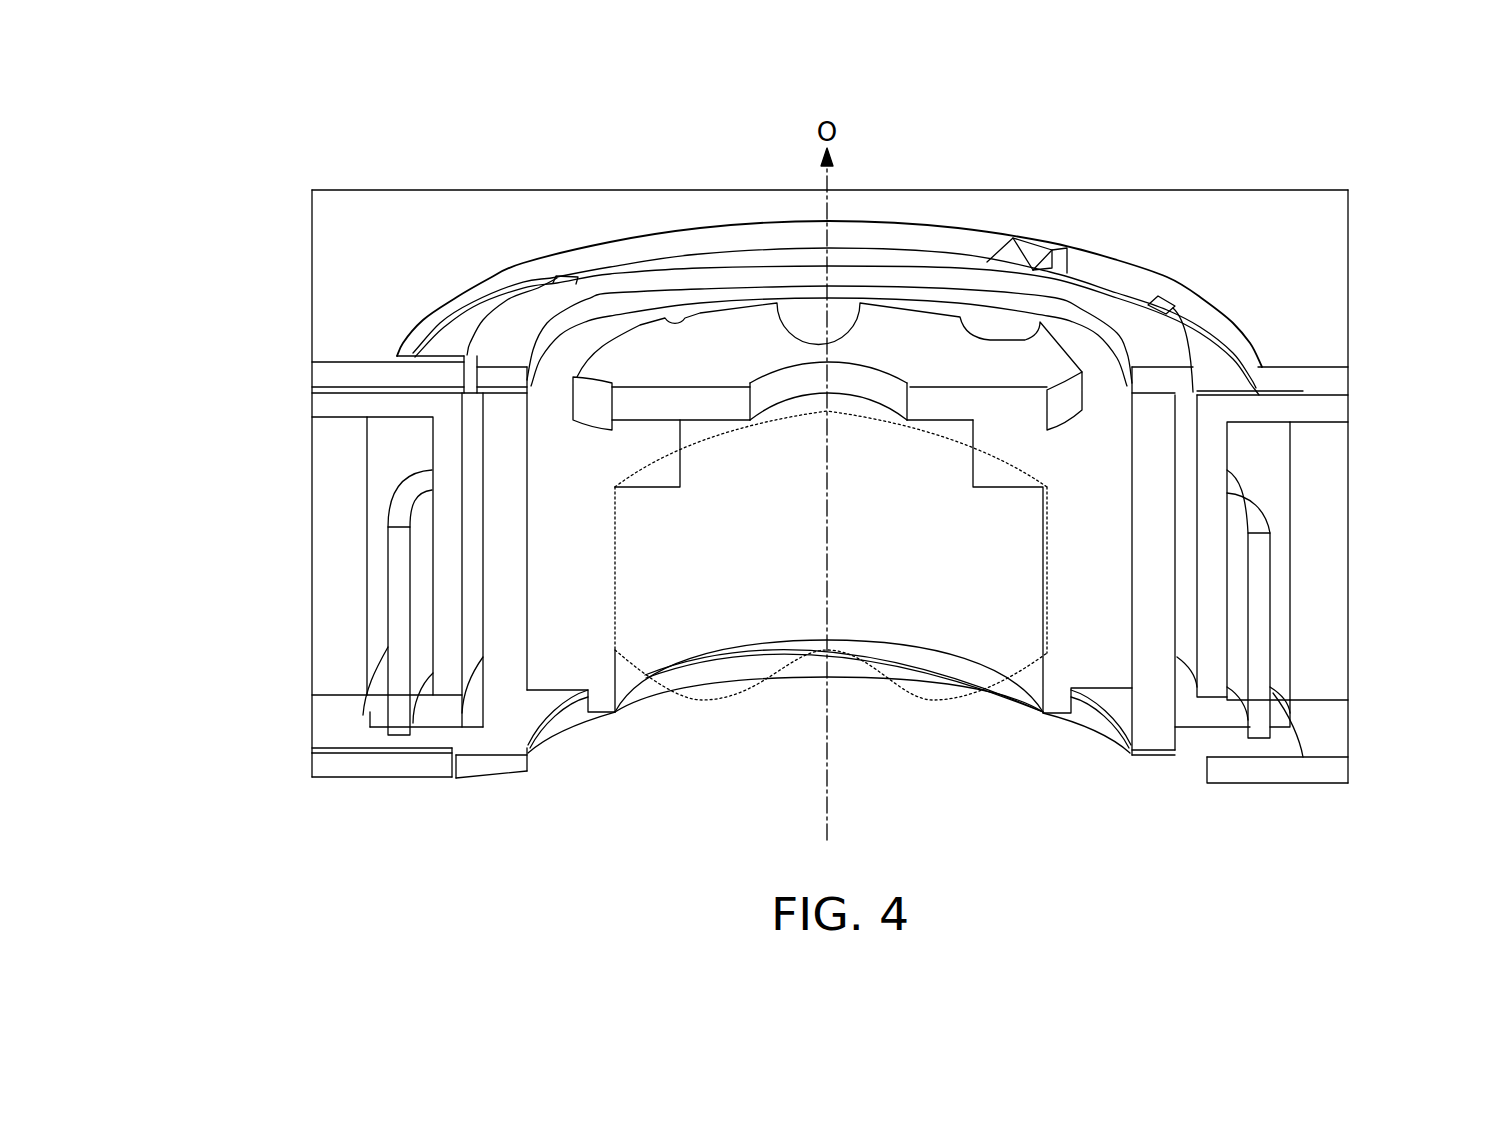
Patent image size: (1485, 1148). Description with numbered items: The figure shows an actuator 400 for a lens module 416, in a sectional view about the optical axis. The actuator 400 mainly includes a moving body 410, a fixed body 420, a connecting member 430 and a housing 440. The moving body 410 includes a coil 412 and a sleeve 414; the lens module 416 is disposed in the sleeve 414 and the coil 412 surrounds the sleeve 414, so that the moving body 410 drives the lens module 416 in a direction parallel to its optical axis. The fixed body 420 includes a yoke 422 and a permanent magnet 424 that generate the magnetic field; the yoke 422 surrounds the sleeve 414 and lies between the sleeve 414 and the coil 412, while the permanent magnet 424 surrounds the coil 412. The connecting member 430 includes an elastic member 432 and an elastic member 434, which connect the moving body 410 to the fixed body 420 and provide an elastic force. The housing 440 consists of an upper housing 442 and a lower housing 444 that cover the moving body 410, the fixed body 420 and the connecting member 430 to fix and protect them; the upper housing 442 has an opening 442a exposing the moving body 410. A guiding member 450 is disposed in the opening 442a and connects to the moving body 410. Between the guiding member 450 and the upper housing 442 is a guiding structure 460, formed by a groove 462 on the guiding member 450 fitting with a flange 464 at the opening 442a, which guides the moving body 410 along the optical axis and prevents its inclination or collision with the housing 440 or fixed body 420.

The actuator 400 is at (1416, 862).
The moving body 410 is at (1428, 568).
The coil 412 is at (1262, 650).
The sleeve 414 is at (1163, 520).
The lens module 416 is at (1118, 600).
The fixed body 420 is at (228, 395).
The yoke 422 is at (312, 408).
The permanent magnet 424 is at (312, 502).
The connecting member 430 is at (478, 853).
The elastic member 432 is at (572, 279).
The elastic member 434 is at (364, 740).
The housing 440 is at (176, 178).
The upper housing 442 is at (330, 255).
The opening 442a is at (457, 338).
The lower housing 444 is at (328, 700).
The guiding member 450 is at (1127, 312).
The guiding structure 460 is at (1048, 108).
The groove 462 is at (1012, 268).
The flange 464 is at (1033, 270).